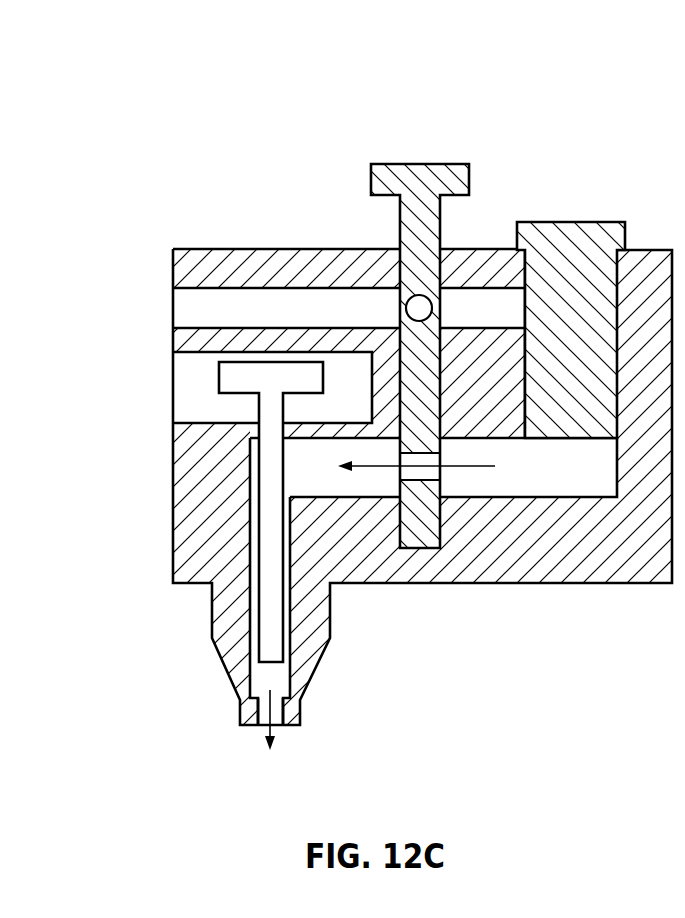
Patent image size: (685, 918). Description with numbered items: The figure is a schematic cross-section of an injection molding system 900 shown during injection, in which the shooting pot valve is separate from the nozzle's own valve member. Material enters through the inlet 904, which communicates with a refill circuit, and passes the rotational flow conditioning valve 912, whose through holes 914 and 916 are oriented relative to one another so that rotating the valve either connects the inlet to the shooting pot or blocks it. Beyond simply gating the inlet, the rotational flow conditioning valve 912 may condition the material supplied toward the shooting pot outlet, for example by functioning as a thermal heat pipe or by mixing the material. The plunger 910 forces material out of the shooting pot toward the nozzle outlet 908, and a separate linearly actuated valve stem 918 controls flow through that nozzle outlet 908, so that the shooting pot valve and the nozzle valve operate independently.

The injection molding system 900 is at (248, 88).
The inlet 904 is at (173, 308).
The nozzle outlet 908 is at (277, 717).
The plunger 910 is at (573, 220).
The rotational flow conditioning valve 912 is at (415, 163).
The through hole 914 is at (410, 308).
The through hole 916 is at (419, 472).
The linearly actuated valve stem 918 is at (218, 378).